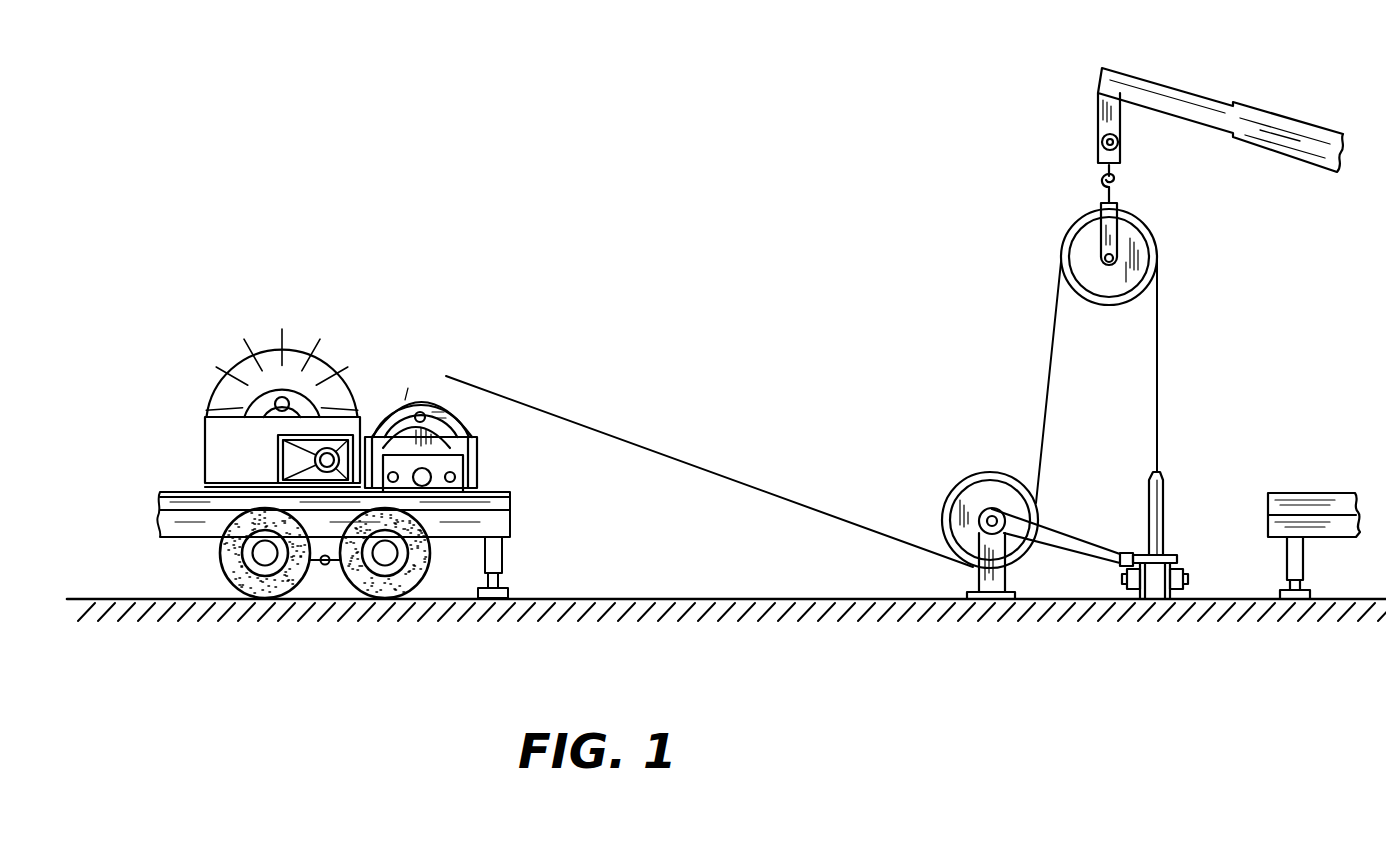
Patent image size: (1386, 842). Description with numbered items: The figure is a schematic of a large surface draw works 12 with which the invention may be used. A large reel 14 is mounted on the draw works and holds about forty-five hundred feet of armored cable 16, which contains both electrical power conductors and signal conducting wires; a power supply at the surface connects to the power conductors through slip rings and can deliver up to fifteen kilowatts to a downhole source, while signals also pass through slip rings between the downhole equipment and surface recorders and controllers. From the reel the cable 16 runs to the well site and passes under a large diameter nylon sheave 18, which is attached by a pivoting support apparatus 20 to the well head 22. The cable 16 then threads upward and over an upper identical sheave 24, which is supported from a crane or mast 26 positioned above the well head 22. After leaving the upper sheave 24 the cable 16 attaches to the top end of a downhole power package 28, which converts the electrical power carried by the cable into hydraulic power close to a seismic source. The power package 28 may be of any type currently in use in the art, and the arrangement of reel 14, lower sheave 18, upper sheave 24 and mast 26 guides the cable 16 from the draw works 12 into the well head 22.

The large surface draw works 12 is at (180, 491).
The large reel 14 is at (313, 332).
The armored cable 16 is at (602, 432).
The large diameter nylon sheave 18 is at (991, 483).
The pivoting support apparatus 20 is at (1060, 533).
The well head 22 is at (1175, 554).
The upper sheave 24 is at (1147, 257).
The crane or mast 26 is at (1218, 100).
The downhole power package 28 is at (1163, 478).